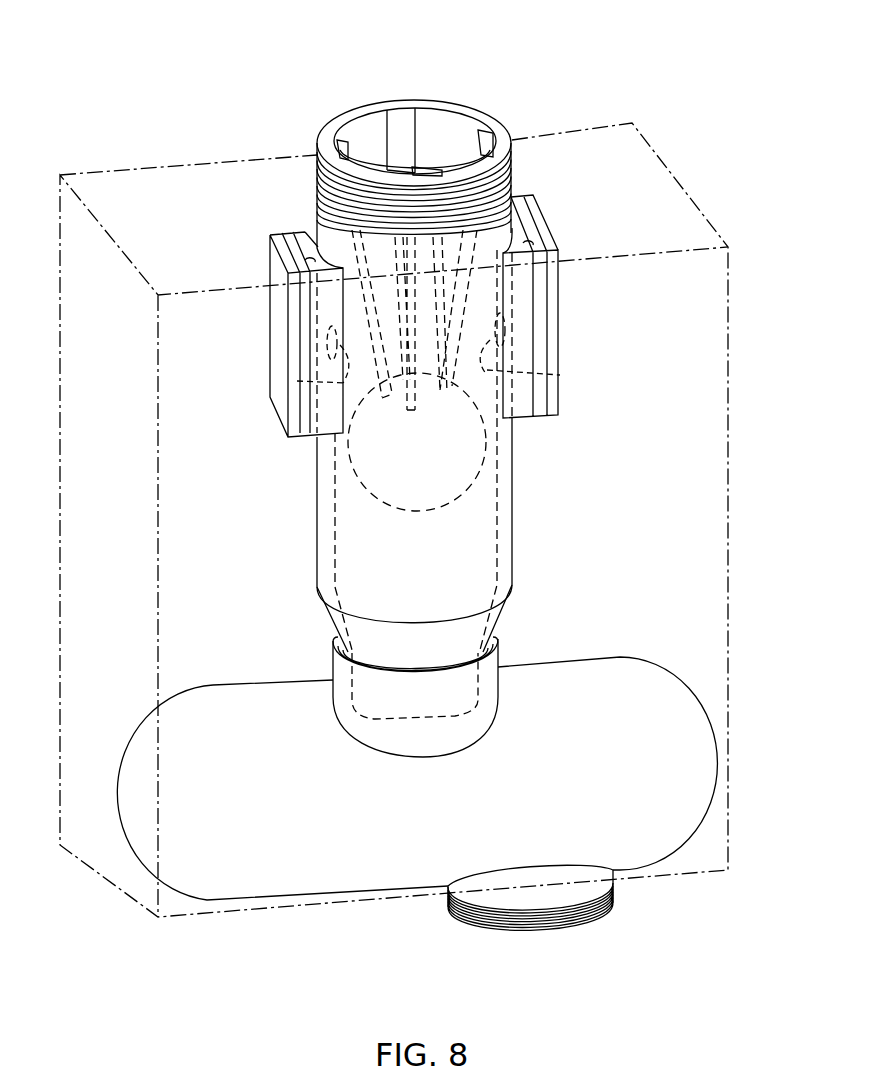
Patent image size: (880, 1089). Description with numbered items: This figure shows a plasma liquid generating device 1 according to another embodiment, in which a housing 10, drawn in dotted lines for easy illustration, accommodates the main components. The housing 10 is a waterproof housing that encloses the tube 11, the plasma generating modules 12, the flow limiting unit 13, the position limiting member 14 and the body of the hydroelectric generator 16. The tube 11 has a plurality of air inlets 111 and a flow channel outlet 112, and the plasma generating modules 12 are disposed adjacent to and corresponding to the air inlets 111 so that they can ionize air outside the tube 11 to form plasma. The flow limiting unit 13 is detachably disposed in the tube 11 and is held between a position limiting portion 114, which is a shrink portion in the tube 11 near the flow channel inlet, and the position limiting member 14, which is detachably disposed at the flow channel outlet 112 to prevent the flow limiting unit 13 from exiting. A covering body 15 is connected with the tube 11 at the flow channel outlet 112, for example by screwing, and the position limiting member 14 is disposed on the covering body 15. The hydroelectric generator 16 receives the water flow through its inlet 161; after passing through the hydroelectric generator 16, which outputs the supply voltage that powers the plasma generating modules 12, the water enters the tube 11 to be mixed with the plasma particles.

The plasma liquid generating device 1 is at (325, 123).
The housing 10 is at (163, 160).
The tube 11 is at (510, 524).
The air inlet 111 is at (297, 381).
The flow channel outlet 112 is at (441, 132).
The plasma generating module 12 is at (268, 270).
The flow limiting unit 13 is at (474, 461).
The position limiting member 14 is at (325, 232).
The covering body 15 is at (513, 180).
The hydroelectric generator 16 is at (245, 675).
The inlet 161 is at (602, 912).
The position limiting portion 114 is at (500, 623).